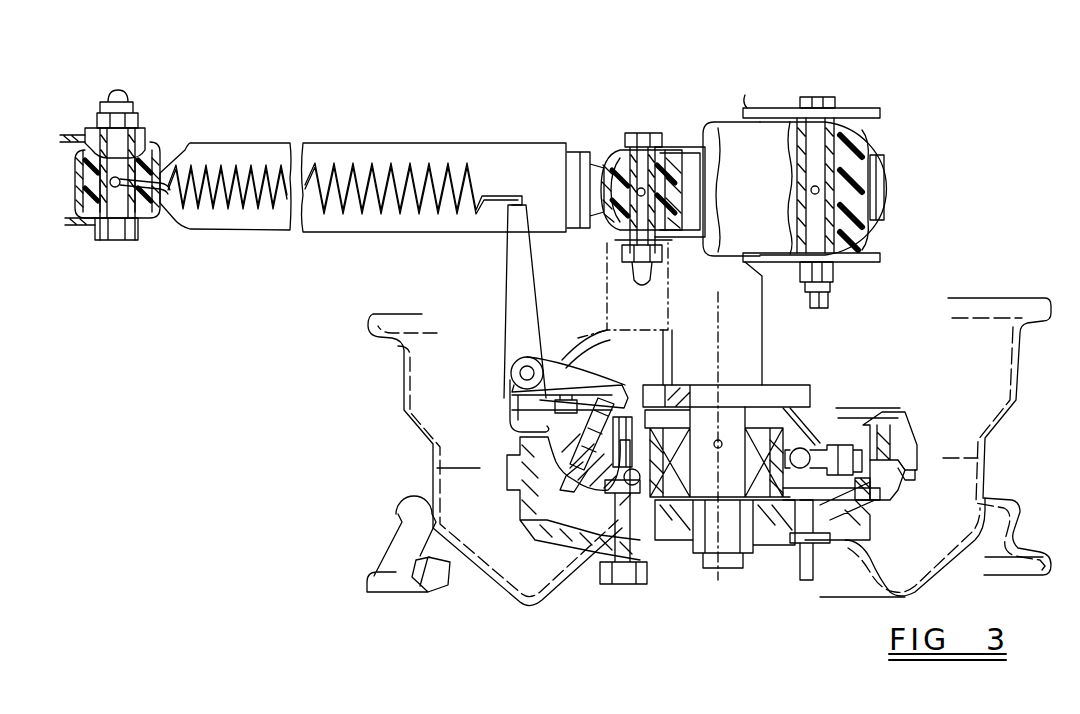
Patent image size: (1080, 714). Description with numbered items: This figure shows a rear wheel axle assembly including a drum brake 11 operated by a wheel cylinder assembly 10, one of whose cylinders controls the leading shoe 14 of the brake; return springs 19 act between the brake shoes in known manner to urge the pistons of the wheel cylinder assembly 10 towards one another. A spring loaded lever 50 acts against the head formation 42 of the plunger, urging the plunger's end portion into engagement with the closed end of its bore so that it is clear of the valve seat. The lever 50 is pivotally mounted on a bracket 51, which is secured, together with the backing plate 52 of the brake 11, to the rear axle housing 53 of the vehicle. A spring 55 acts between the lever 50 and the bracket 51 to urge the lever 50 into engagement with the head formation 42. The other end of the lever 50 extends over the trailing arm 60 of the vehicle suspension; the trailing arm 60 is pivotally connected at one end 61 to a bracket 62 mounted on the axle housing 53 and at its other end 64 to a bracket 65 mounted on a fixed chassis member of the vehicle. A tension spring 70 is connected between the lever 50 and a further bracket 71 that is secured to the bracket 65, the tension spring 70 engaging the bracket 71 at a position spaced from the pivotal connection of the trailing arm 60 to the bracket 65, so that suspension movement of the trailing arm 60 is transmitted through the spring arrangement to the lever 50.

The wheel cylinder assembly 10 is at (552, 488).
The drum brake 11 is at (906, 478).
The leading shoe 14 is at (884, 510).
The return springs 19 is at (808, 445).
The head formation 42 is at (608, 392).
The lever 50 is at (512, 292).
The bracket 51 is at (505, 398).
The backing plate 52 is at (898, 412).
The rear axle housing 53 is at (765, 385).
The spring 55 is at (575, 350).
The trailing arm 60 is at (520, 175).
The end 61 is at (608, 148).
The bracket 62 is at (688, 152).
The end 64 is at (178, 150).
The bracket 65 is at (74, 135).
The tension spring 70 is at (350, 172).
The bracket 71 is at (146, 132).